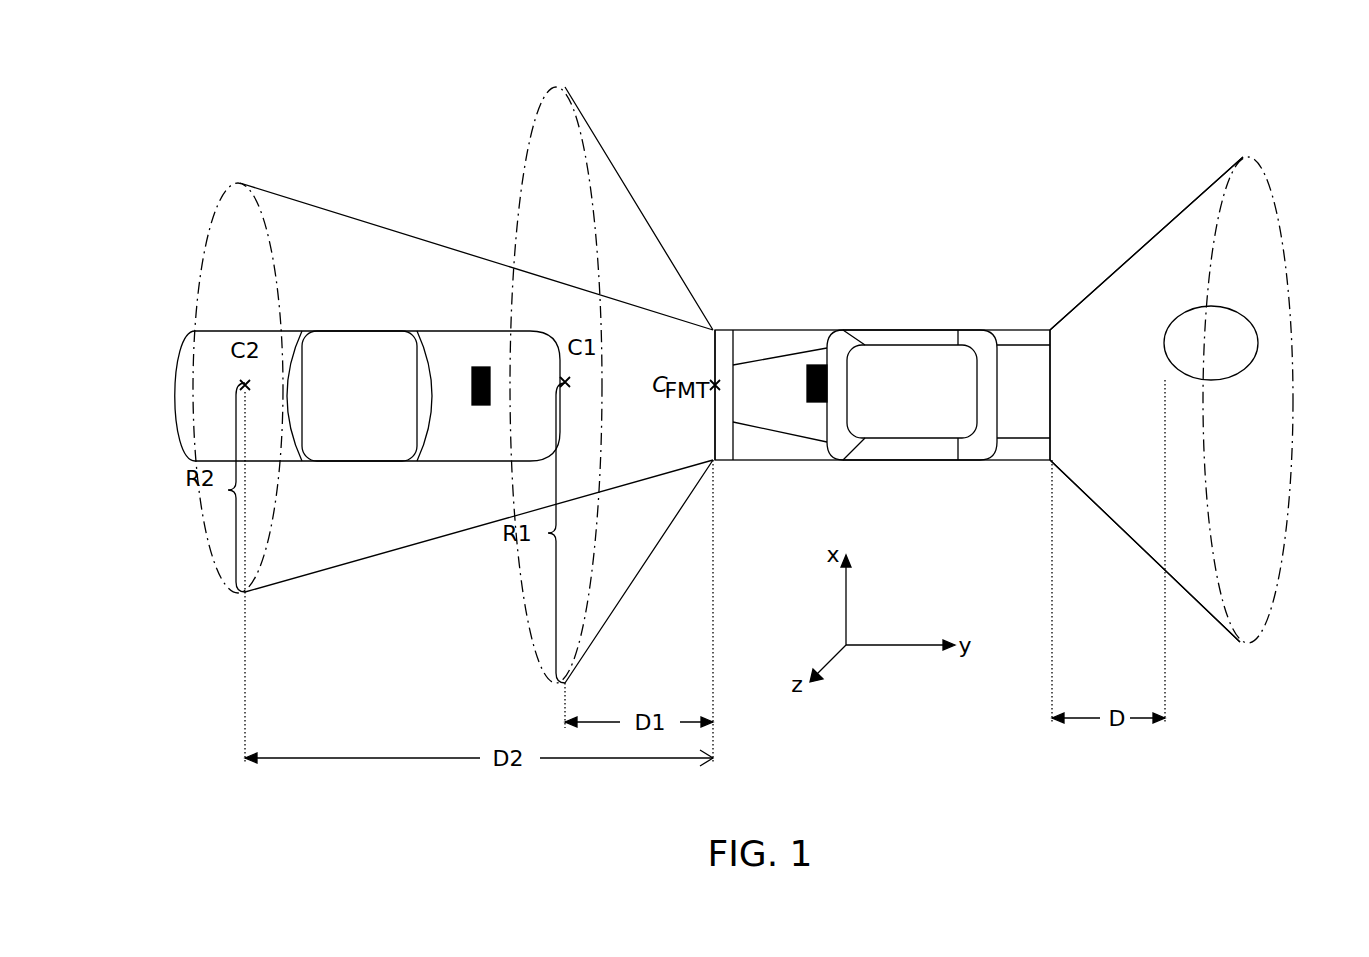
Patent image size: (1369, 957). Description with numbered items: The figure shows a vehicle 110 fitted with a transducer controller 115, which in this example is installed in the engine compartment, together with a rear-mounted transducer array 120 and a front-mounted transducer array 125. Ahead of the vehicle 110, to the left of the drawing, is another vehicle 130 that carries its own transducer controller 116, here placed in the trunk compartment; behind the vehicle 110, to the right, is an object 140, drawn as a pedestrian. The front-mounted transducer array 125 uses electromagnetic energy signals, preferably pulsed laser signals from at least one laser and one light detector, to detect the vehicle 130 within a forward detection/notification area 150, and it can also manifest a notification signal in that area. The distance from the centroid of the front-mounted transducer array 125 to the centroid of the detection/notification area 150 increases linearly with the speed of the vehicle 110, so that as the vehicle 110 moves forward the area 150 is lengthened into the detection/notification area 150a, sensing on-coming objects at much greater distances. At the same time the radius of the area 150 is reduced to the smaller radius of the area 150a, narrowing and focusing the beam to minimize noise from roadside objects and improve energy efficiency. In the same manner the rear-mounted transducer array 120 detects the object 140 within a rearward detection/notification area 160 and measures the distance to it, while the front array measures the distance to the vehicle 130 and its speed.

The vehicle 110 is at (903, 329).
The transducer controller 115 is at (807, 383).
The transducer controller 116 is at (472, 382).
The rear-mounted transducer array 120 is at (1052, 400).
The front-mounted transducer array 125 is at (718, 347).
The vehicle 130 is at (360, 331).
The object 140 is at (1215, 307).
The detection/notification area 150 is at (570, 263).
The detection/notification area 150a is at (248, 238).
The detection/notification area 160 is at (1188, 242).